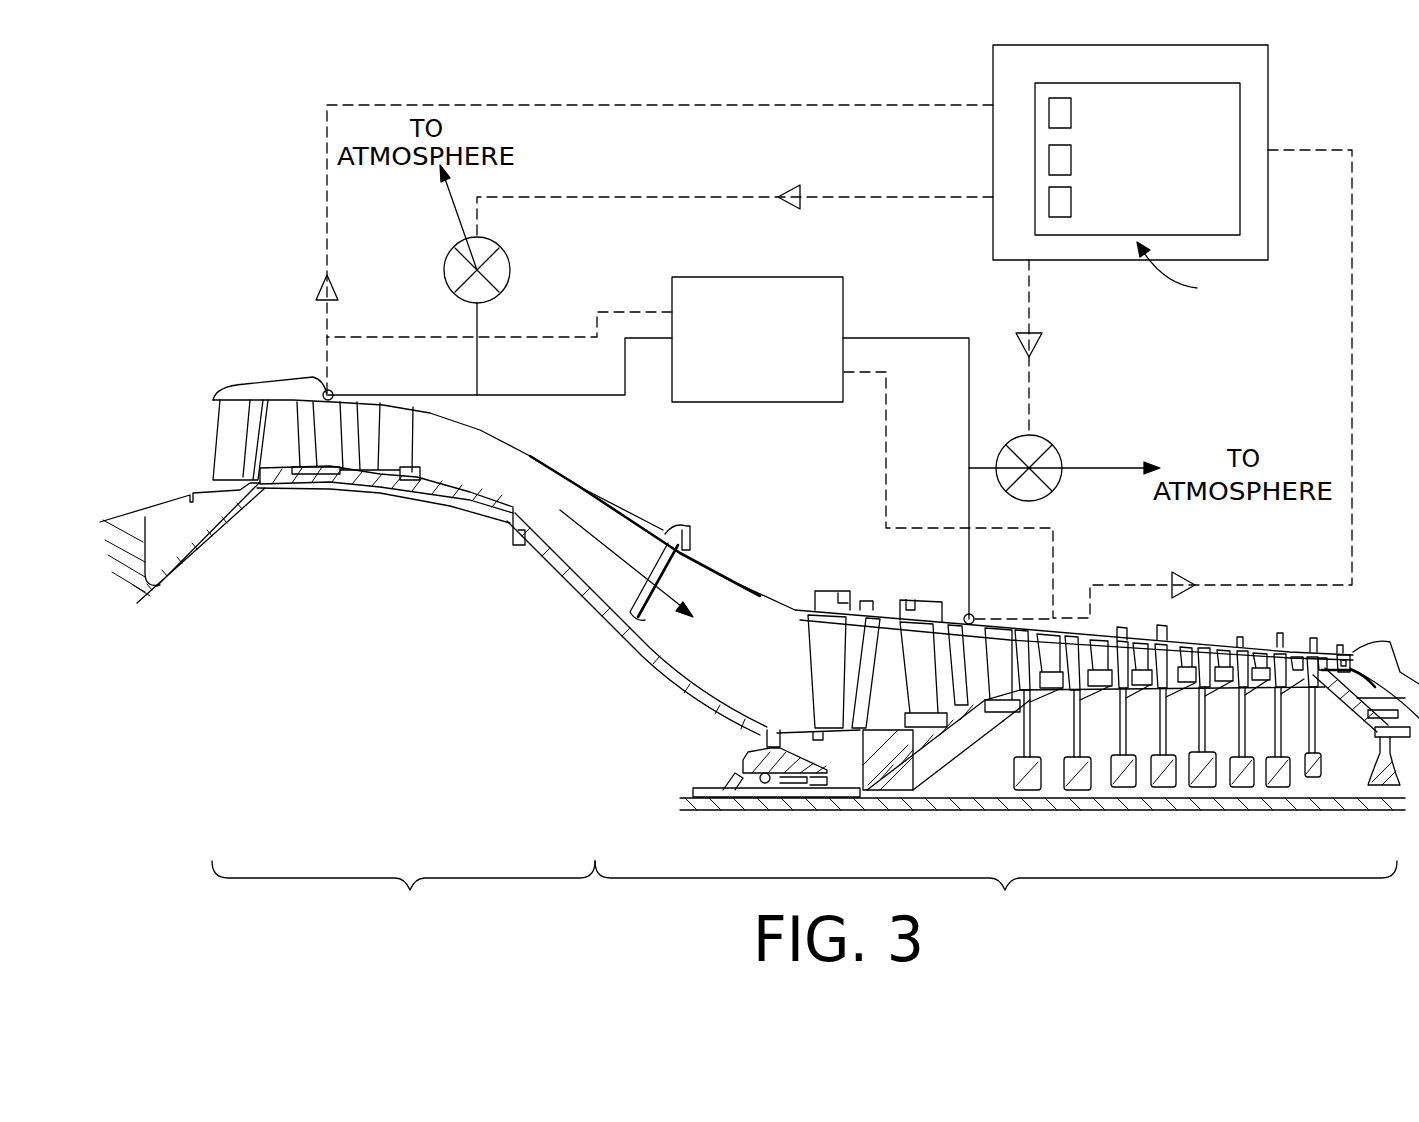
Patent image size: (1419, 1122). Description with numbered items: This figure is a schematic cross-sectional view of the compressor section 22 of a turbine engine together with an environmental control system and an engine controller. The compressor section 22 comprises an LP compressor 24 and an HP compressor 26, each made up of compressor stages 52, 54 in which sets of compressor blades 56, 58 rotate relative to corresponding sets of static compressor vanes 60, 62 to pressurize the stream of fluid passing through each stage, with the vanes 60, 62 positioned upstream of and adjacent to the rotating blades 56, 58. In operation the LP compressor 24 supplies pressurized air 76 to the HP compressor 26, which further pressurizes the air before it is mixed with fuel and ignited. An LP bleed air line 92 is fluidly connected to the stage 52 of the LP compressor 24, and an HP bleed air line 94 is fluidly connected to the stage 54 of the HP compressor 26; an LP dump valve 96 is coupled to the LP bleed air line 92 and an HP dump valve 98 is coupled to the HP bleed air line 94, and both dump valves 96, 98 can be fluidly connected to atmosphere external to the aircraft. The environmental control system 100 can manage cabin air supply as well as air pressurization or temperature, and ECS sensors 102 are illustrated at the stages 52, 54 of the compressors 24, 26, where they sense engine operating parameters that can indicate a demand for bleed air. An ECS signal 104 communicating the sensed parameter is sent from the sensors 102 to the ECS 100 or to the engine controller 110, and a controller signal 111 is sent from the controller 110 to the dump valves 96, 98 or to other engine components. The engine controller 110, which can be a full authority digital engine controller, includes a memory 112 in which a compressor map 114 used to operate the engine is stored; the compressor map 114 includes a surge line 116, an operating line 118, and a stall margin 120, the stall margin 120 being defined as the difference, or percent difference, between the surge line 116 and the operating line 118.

The compressor section 22 is at (218, 177).
The LP compressor 24 is at (410, 890).
The HP compressor 26 is at (1005, 890).
The compressor stage 52 is at (323, 492).
The compressor stage 54 is at (915, 553).
The compressor blades 56 is at (273, 443).
The compressor blades 58 is at (968, 680).
The static compressor vanes 60 is at (233, 423).
The static compressor vanes 62 is at (825, 632).
The pressurized air 76 is at (645, 545).
The LP bleed air line 92 is at (570, 398).
The HP bleed air line 94 is at (968, 440).
The LP dump valve 96 is at (492, 240).
The HP dump valve 98 is at (1038, 500).
The environmental control system 100 is at (782, 348).
The ECS sensors 102 is at (325, 390).
The ECS signal 104 is at (324, 280).
The engine controller 110 is at (1053, 76).
The controller signal 111 is at (796, 207).
The memory 112 is at (1188, 274).
The compressor map 114 is at (1148, 83).
The surge line 116 is at (1071, 113).
The operating line 118 is at (1071, 160).
The stall margin 120 is at (1071, 202).